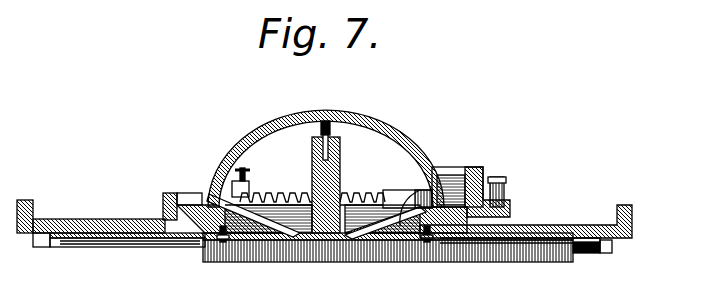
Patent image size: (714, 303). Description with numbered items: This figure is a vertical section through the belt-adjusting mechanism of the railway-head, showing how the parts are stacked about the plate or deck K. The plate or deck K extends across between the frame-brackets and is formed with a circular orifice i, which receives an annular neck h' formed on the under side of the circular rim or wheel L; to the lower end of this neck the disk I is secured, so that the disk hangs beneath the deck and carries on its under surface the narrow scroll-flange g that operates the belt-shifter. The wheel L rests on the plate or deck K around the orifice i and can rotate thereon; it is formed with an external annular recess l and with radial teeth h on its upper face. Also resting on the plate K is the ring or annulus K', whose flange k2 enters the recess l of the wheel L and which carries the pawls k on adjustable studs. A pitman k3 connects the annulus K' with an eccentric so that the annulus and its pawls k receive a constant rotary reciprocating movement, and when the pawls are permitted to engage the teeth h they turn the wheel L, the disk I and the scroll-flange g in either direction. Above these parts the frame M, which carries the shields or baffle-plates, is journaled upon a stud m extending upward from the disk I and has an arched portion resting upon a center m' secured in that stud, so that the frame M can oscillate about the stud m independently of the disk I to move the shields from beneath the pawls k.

The disk I is at (45, 245).
The external annular recess l is at (163, 203).
The circular rim or wheel L is at (193, 200).
The scroll-flange g is at (265, 250).
The circular orifice i is at (197, 223).
The frame M is at (326, 158).
The stud m is at (345, 185).
The center m' is at (352, 125).
The radial teeth h is at (328, 188).
The annular neck h' is at (405, 243).
The pawls k is at (447, 172).
The flange k2 is at (473, 237).
The pitman k3 is at (508, 180).
The plate or deck K is at (526, 218).
The ring or annulus K' is at (507, 190).